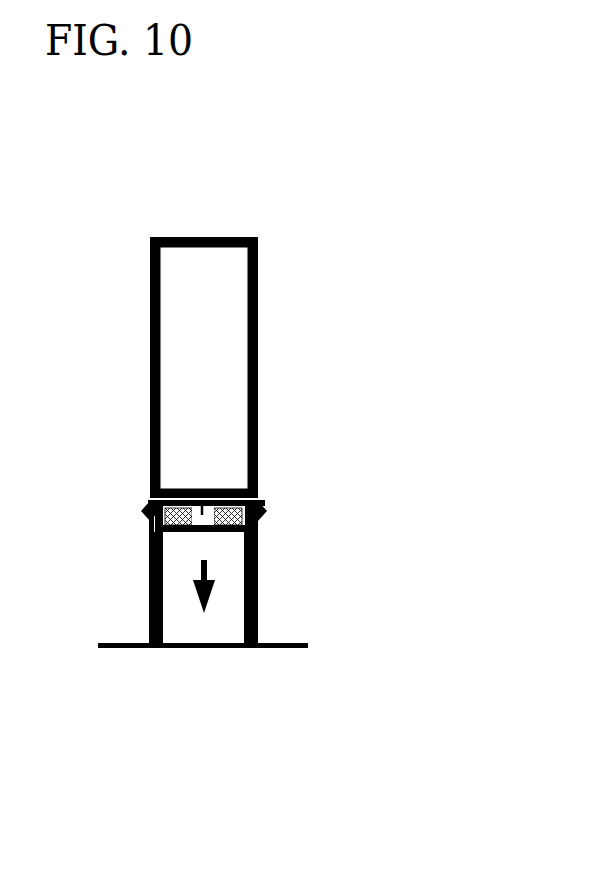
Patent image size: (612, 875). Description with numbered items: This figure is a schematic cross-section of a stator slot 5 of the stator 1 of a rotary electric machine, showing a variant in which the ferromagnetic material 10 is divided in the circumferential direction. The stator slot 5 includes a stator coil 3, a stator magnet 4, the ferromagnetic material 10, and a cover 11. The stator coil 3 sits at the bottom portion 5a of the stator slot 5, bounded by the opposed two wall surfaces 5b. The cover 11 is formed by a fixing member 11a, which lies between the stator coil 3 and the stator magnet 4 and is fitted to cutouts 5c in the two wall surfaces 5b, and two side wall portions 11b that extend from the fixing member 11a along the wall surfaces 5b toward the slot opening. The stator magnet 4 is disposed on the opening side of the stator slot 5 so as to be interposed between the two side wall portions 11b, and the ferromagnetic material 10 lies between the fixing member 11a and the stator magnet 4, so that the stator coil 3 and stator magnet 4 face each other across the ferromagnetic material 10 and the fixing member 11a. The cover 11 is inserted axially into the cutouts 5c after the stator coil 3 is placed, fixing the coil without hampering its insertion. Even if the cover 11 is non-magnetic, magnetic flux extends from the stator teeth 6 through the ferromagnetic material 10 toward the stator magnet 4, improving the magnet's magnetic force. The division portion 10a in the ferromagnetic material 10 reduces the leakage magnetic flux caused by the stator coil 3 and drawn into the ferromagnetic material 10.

The stator 1 is at (386, 218).
The stator coil 3 is at (238, 356).
The stator magnet 4 is at (182, 630).
The stator slot 5 is at (208, 237).
The bottom portion 5a is at (236, 250).
The wall surfaces 5b is at (148, 368).
The cutouts 5c is at (150, 503).
The stator teeth 6 is at (132, 633).
The ferromagnetic material 10 is at (258, 496).
The division portion 10a is at (201, 508).
The cover 11 is at (397, 555).
The fixing member 11a is at (262, 513).
The side wall portions 11b is at (258, 562).